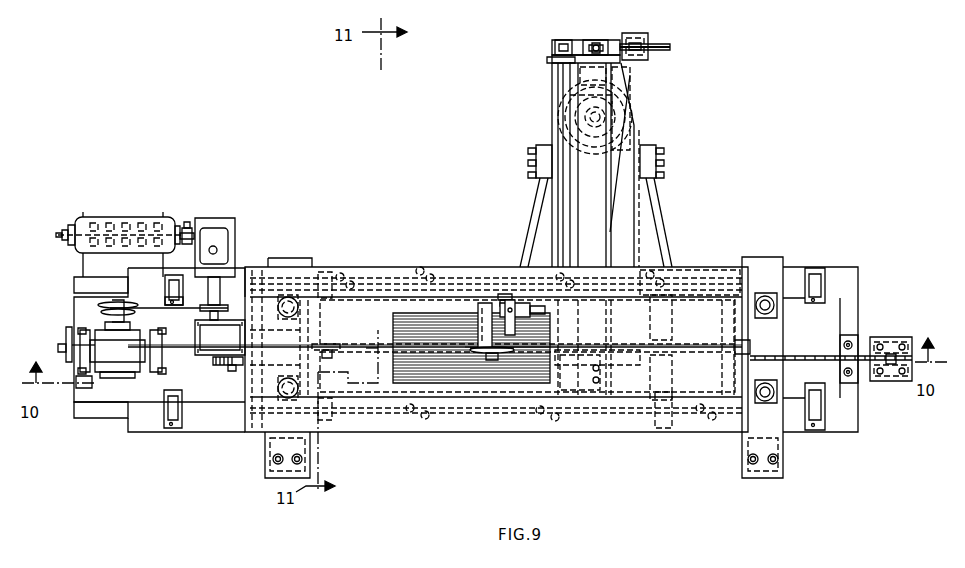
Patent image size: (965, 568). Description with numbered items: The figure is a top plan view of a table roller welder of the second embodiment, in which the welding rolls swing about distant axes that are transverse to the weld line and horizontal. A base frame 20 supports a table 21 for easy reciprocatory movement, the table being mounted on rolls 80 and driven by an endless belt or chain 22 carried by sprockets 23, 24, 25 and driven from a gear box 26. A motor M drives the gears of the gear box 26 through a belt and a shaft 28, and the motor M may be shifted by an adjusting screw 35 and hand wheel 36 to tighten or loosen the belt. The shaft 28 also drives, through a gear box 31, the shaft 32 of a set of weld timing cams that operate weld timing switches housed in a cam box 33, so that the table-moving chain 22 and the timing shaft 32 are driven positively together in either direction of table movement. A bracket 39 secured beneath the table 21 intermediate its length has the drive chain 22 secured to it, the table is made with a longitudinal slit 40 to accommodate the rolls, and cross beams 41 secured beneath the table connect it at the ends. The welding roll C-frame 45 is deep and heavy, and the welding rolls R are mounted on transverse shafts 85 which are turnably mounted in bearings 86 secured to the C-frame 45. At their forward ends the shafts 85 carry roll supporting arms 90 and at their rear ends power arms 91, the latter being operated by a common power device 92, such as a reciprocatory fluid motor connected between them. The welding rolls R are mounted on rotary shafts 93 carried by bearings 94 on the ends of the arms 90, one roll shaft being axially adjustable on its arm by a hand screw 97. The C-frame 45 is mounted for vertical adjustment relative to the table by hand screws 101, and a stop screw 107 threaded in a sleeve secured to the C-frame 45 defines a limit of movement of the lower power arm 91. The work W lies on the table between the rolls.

The base frame 20 is at (215, 432).
The table 21 is at (702, 270).
The endless belt or chain 22 is at (800, 365).
The sprocket 23 is at (224, 366).
The sprocket 24 is at (905, 348).
The sprocket 25 is at (330, 354).
The gear box 26 is at (232, 346).
The shaft 28 is at (222, 290).
The gear box 31 is at (220, 230).
The timing shaft 32 is at (187, 222).
The cam box 33 is at (93, 222).
The adjusting screw 35 is at (85, 380).
The hand wheel 36 is at (66, 340).
The bracket 39 is at (620, 372).
The longitudinal slit 40 is at (683, 345).
The cross beam 41 is at (745, 345).
The welding roll C-frame 45 is at (600, 165).
The roll 80 is at (170, 289).
The transverse shaft 85 is at (563, 77).
The bearing 86 is at (547, 59).
The roll supporting arm 90 is at (530, 320).
The power arm 91 is at (662, 44).
The power device 92 is at (634, 36).
The rotary shaft 93 is at (492, 362).
The bearing 94 is at (478, 312).
The hand screw 97 is at (504, 294).
The hand screw 101 is at (616, 112).
The stop screw 107 is at (605, 40).
The motor M is at (122, 339).
The workpiece W is at (403, 313).
The welding roll R is at (503, 353).